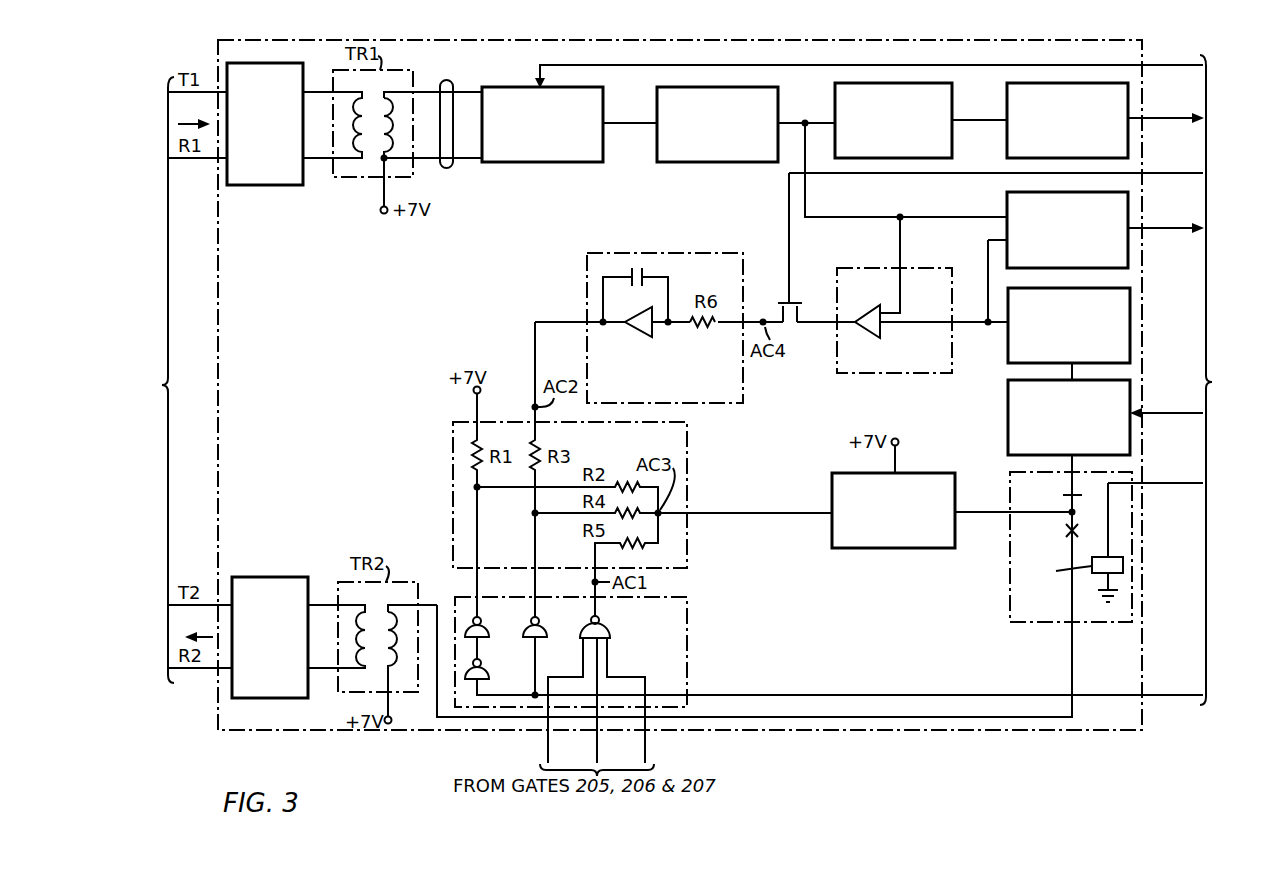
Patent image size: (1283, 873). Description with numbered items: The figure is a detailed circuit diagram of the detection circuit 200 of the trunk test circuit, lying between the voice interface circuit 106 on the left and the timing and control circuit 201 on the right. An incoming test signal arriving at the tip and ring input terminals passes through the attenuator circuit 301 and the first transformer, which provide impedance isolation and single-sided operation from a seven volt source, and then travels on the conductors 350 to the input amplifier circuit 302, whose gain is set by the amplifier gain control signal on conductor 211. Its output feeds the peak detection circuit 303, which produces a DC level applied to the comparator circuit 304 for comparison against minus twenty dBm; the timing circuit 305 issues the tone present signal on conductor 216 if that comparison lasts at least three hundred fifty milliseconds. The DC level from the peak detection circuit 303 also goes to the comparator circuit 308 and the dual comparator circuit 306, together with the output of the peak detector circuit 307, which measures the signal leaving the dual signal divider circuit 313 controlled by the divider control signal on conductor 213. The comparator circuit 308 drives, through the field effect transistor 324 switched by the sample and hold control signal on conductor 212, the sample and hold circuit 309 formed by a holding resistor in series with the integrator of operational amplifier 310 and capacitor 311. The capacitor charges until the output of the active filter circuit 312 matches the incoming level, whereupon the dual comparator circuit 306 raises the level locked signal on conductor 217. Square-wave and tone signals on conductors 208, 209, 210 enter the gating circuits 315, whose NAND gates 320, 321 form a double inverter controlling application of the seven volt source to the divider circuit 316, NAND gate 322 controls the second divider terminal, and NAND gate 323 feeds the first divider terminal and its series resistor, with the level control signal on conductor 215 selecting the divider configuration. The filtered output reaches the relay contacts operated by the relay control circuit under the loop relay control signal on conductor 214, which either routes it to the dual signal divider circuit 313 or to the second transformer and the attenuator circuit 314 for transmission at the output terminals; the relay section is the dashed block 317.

The detection circuit 200 is at (218, 386).
The voice interface circuit 106 is at (134, 380).
The timing and control circuit 201 is at (1236, 380).
The attenuator circuit 301 is at (279, 186).
The conductors 350 is at (447, 80).
The input amplifier circuit 302 is at (536, 163).
The peak detection circuit 303 is at (708, 163).
The comparator circuit 304 is at (835, 100).
The timing circuit 305 is at (1007, 99).
The dual comparator circuit 306 is at (1007, 204).
The peak detector circuit 307 is at (1008, 346).
The comparator circuit 308 is at (877, 270).
The sample and hold circuit 309 is at (628, 236).
The high gain operational amplifier 310 is at (640, 334).
The capacitor 311 is at (645, 270).
The active filter circuit 312 is at (893, 548).
The dual signal divider circuit 313 is at (1008, 420).
The attenuator circuit 314 is at (284, 577).
The gating circuits 315 is at (687, 651).
The divider circuit 316 is at (687, 445).
The relay circuit 317 is at (1020, 622).
The NAND gate 320 is at (500, 619).
The NAND gate 321 is at (500, 663).
The NAND gate 322 is at (541, 626).
The NAND gate 323 is at (588, 636).
The field effect transistor 324 is at (793, 326).
The conductor 211 is at (1195, 70).
The conductor 212 is at (1198, 180).
The conductor 213 is at (1204, 422).
The conductor 214 is at (1202, 493).
The conductor 215 is at (1202, 704).
The conductor 216 is at (1156, 135).
The conductor 217 is at (1156, 245).
The conductor 208 is at (548, 755).
The conductor 209 is at (597, 755).
The conductor 210 is at (645, 755).